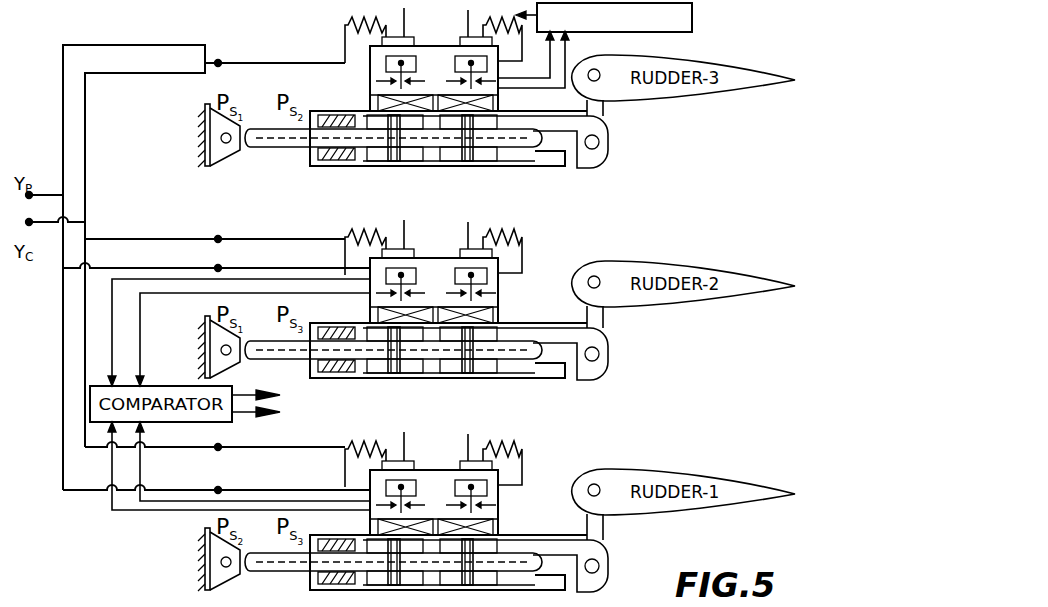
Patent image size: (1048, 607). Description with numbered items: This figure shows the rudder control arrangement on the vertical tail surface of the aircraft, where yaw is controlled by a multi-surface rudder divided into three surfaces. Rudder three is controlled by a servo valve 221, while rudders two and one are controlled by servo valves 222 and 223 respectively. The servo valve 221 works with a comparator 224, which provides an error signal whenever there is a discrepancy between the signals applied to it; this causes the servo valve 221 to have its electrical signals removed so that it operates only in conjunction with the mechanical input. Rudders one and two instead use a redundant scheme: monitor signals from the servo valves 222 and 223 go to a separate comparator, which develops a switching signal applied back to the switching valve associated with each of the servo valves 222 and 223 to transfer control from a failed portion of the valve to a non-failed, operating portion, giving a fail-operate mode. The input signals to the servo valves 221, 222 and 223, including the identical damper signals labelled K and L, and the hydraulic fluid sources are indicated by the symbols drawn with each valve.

The servo valve 221 is at (433, 55).
The servo valve 222 is at (414, 218).
The servo valve 223 is at (433, 470).
The comparator 224 is at (692, 20).